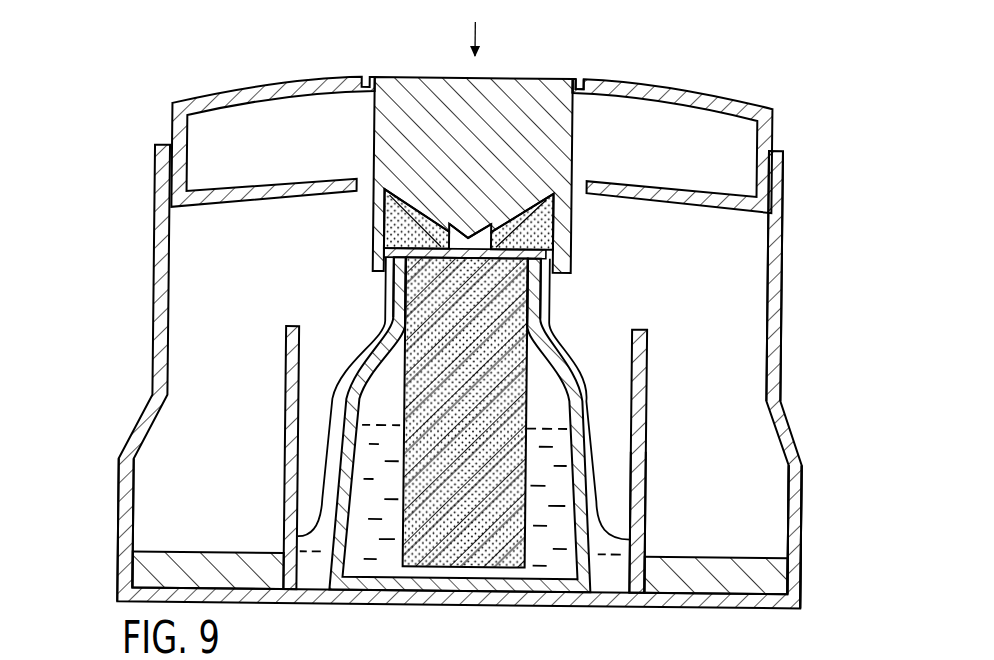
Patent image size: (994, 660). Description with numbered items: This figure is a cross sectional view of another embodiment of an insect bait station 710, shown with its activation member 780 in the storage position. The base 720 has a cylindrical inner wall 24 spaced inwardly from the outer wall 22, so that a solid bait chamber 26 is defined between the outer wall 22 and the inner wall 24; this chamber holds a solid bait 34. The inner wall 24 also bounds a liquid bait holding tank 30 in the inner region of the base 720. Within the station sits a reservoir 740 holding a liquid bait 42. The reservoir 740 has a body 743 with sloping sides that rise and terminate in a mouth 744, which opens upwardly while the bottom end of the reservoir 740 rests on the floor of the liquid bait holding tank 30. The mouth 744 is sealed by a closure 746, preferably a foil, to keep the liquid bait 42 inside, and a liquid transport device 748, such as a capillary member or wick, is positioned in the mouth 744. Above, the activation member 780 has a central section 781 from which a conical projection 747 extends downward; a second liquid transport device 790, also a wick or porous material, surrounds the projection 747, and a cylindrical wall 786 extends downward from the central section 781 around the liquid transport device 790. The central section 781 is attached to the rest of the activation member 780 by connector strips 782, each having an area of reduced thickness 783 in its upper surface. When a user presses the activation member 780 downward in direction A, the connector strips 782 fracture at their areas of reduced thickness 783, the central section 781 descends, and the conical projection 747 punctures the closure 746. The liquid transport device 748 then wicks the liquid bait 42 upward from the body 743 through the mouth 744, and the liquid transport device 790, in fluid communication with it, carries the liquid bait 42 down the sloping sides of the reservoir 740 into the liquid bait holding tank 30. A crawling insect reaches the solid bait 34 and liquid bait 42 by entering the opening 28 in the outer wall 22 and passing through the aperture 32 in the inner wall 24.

The insect bait station 710 is at (118, 218).
The base 720 is at (446, 376).
The outer wall 22 is at (801, 477).
The inner wall 24 is at (668, 462).
The solid bait chamber 26 is at (750, 455).
The opening 28 is at (104, 526).
The liquid bait holding tank 30 is at (310, 318).
The aperture 32 is at (645, 506).
The solid bait 34 is at (143, 580).
The liquid bait 42 is at (598, 447).
The reservoir 740 is at (459, 456).
The body 743 is at (337, 445).
The mouth 744 is at (550, 312).
The closure 746 is at (417, 284).
The conical projection 747 is at (467, 234).
The liquid transport device 748 is at (528, 380).
The activation member 780 is at (472, 111).
The central section 781 is at (441, 148).
The connector strips 782 is at (581, 56).
The area of reduced thickness 783 is at (582, 80).
The cylindrical wall 786 is at (568, 255).
The liquid transport device 790 is at (390, 240).